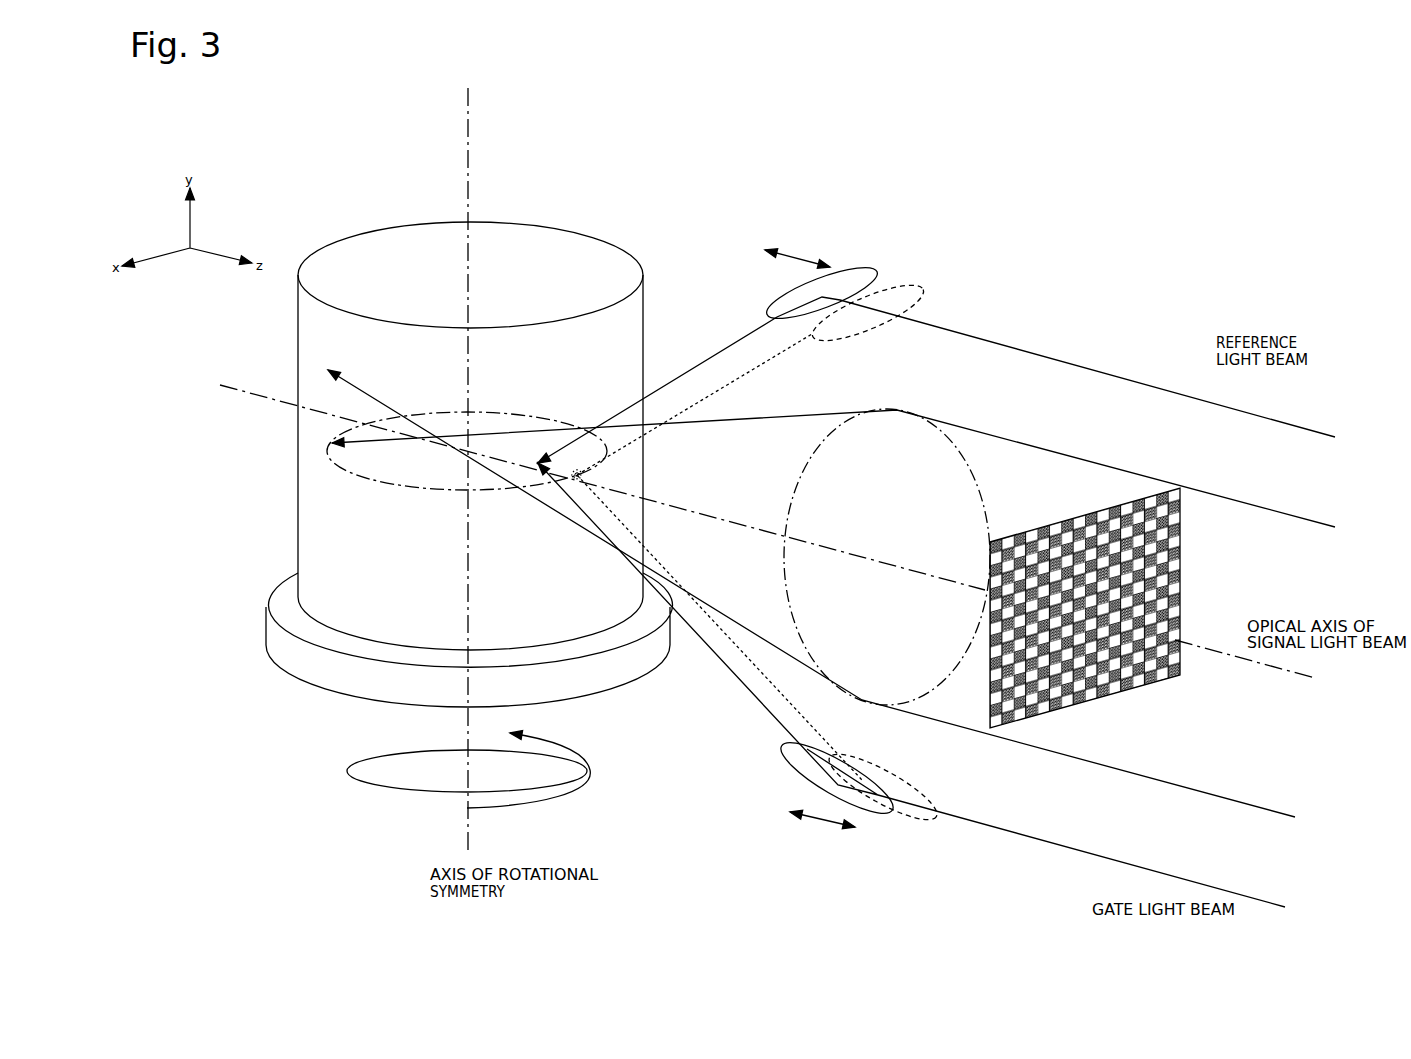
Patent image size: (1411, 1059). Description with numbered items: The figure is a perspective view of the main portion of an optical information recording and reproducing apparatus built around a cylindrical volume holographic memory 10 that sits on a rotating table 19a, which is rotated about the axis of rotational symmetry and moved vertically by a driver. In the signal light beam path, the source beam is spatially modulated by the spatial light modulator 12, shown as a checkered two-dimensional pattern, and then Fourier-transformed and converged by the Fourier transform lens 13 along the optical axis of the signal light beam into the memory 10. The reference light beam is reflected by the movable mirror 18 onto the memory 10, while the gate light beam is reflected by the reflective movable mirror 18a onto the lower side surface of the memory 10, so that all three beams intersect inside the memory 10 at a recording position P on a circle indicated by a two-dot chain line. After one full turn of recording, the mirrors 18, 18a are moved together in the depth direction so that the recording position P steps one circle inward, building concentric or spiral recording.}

The volume holographic memory 10 is at (350, 262).
The spatial light modulator 12 is at (1167, 680).
The Fourier transform lens 13 is at (810, 616).
The movable mirror 18 is at (877, 272).
The reflective movable mirror 18a is at (873, 810).
The rotating table 19a is at (338, 685).
The recording position P is at (538, 455).